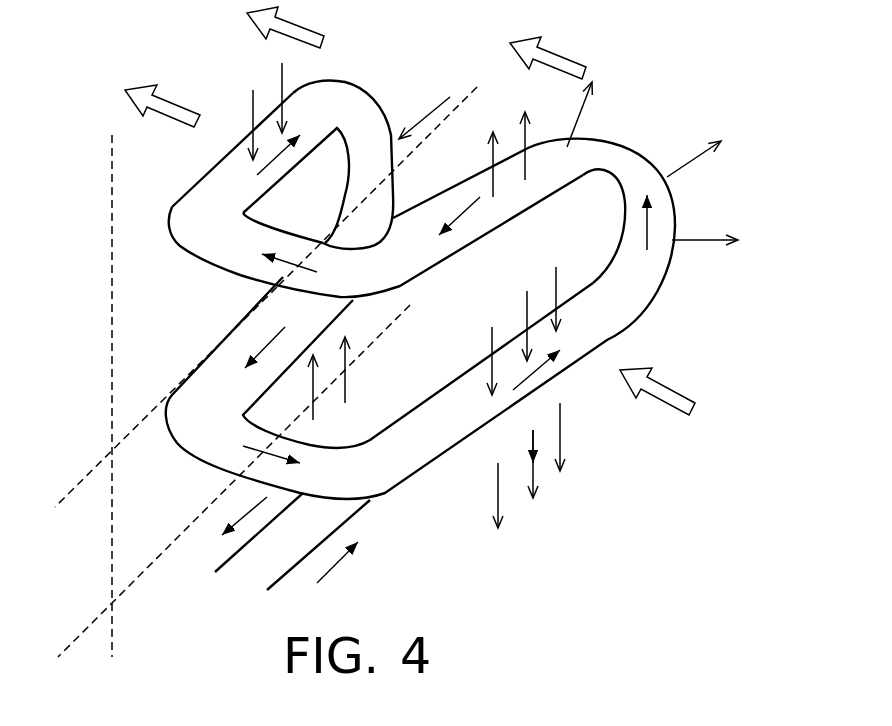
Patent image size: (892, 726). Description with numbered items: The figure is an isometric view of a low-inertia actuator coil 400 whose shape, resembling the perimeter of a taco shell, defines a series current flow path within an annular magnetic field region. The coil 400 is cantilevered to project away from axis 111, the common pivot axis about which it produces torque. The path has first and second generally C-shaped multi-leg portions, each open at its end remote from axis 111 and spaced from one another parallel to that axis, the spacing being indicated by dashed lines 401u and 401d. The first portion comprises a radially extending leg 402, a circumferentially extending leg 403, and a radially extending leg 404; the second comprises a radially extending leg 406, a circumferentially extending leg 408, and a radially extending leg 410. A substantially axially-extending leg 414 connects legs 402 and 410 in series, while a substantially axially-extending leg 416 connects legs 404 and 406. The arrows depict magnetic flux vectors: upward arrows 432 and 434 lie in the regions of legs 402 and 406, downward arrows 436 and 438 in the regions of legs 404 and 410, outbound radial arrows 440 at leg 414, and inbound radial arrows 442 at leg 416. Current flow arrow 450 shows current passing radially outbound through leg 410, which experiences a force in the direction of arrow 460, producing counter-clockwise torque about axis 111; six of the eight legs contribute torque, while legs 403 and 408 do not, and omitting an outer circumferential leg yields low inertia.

The low-inertia actuator coil 400 is at (614, 498).
The dashed line 401u is at (80, 475).
The dashed line 401d is at (87, 632).
The radially extending leg 402 is at (526, 208).
The circumferentially extending leg 403 is at (231, 257).
The radially extending leg 404 is at (267, 123).
The radially extending leg 406 is at (261, 332).
The circumferentially extending leg 408 is at (232, 445).
The radially extending leg 410 is at (583, 337).
The axis 111 is at (110, 292).
The substantially axially-extending leg 414 is at (623, 210).
The substantially axially-extending leg 416 is at (394, 138).
The arrows 432 is at (530, 152).
The arrows 434 is at (350, 390).
The arrows 436 is at (285, 80).
The arrows 438 is at (497, 480).
The arrows 440 is at (700, 238).
The arrows 442 is at (480, 84).
The current flow arrow 450 is at (548, 368).
The arrow 460 is at (651, 401).